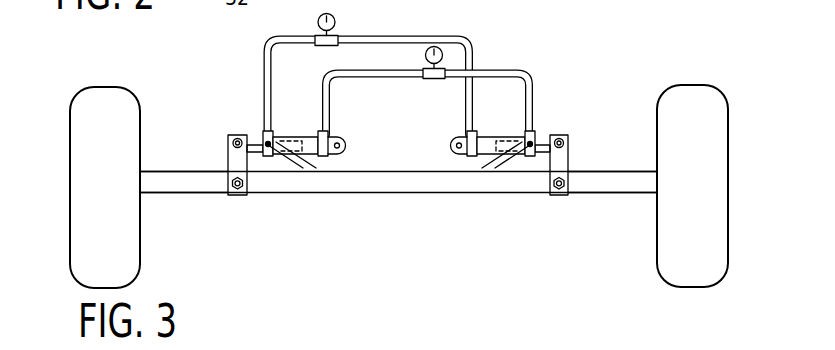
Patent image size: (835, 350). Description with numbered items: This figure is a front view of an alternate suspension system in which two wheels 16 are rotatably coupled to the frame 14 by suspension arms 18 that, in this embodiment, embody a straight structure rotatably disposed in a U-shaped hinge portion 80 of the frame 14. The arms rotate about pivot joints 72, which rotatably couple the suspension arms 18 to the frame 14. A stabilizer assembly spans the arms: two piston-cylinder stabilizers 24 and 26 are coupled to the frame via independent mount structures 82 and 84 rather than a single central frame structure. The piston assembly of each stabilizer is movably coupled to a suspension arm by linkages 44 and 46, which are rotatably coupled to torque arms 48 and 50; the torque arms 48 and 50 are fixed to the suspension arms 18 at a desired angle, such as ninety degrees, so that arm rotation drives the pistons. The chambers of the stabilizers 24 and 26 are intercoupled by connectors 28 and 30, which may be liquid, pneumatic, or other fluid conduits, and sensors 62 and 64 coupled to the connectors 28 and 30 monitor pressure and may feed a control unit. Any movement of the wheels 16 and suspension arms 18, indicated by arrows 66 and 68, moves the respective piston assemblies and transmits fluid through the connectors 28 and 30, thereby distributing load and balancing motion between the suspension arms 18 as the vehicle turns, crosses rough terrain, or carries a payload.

The frame 14 is at (397, 194).
The wheels 16 is at (68, 190).
The suspension arms 18 is at (183, 194).
The stabilizer 24 is at (350, 130).
The stabilizer 26 is at (446, 140).
The connector 28 is at (395, 37).
The connector 30 is at (508, 69).
The linkage 44 is at (273, 150).
The linkage 46 is at (538, 153).
The torque arm 48 is at (228, 152).
The torque arm 50 is at (567, 152).
The sensor 62 is at (322, 46).
The sensor 64 is at (435, 80).
The arrows 66 is at (155, 213).
The arrows 68 is at (246, 123).
The pivot joints 72 is at (243, 211).
The U-shaped hinge portion 80 is at (243, 211).
The mount structure 82 is at (300, 168).
The mount structure 84 is at (493, 168).